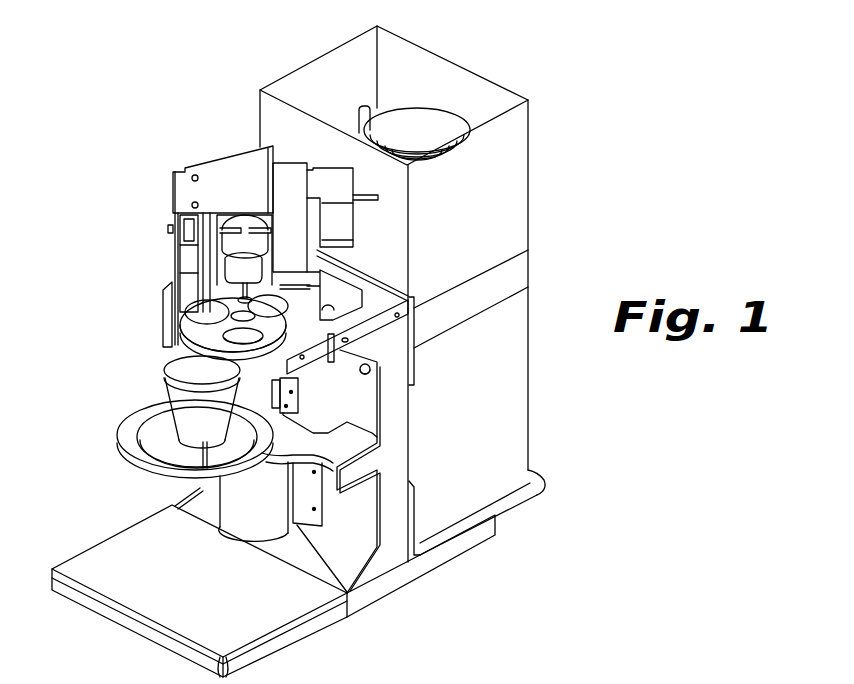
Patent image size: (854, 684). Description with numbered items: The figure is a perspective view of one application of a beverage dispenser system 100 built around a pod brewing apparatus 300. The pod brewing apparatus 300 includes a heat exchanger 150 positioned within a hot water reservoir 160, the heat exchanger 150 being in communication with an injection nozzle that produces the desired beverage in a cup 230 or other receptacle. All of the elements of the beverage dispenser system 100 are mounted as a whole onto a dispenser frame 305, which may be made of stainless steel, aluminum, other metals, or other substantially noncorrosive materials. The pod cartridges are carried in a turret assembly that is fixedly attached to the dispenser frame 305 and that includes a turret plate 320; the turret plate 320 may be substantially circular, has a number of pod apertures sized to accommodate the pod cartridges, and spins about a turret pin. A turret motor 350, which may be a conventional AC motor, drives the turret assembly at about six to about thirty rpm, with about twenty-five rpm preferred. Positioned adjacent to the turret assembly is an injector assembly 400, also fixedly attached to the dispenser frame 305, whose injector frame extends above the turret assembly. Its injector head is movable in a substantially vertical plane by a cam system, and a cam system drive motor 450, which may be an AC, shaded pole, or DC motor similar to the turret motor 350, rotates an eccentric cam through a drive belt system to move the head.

The beverage dispenser system 100 is at (104, 61).
The pod brewing apparatus 300 is at (306, 62).
The heat exchanger 150 is at (438, 107).
The hot water reservoir 160 is at (531, 98).
The cam system drive motor 450 is at (272, 161).
The turret motor 350 is at (204, 219).
The injector assembly 400 is at (191, 301).
The turret plate 320 is at (183, 335).
The cup 230 is at (207, 418).
The dispenser frame 305 is at (398, 403).